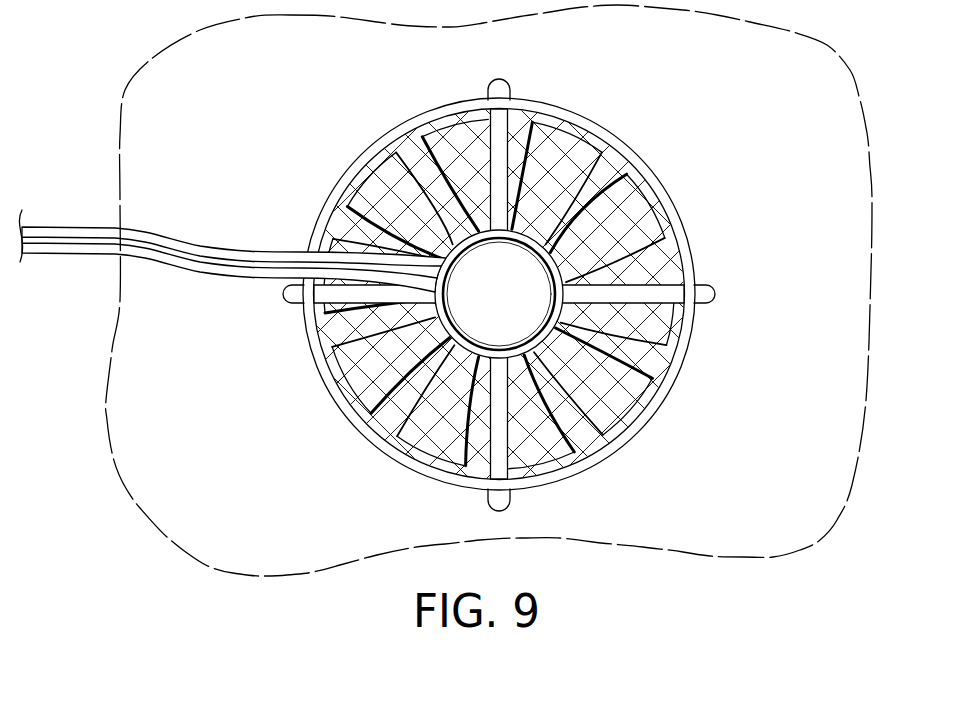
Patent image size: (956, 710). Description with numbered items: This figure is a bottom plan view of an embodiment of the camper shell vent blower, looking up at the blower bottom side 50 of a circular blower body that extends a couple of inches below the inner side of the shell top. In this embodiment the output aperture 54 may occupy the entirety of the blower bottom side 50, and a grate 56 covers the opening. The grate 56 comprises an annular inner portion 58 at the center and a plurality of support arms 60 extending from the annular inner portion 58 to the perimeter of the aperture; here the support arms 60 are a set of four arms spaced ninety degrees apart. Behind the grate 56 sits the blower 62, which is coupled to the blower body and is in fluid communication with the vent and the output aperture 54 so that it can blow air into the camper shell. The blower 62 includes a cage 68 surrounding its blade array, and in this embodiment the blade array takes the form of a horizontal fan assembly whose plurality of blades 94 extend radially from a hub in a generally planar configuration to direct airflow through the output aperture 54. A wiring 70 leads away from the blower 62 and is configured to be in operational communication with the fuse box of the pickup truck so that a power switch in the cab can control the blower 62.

The blower bottom side 50 is at (540, 271).
The output aperture 54 is at (615, 145).
The grate 56 is at (675, 290).
The annular inner portion 58 is at (553, 327).
The support arms 60 is at (497, 428).
The blower 62 is at (485, 283).
The cage 68 is at (423, 152).
The wiring 70 is at (218, 252).
The blades 94 is at (632, 230).